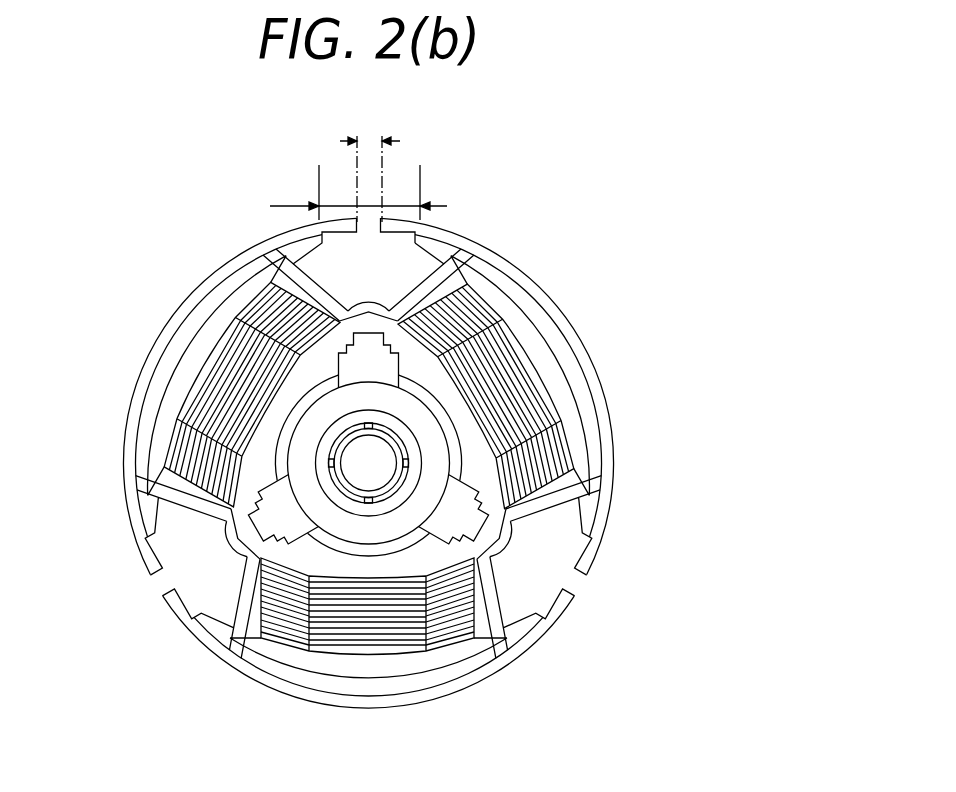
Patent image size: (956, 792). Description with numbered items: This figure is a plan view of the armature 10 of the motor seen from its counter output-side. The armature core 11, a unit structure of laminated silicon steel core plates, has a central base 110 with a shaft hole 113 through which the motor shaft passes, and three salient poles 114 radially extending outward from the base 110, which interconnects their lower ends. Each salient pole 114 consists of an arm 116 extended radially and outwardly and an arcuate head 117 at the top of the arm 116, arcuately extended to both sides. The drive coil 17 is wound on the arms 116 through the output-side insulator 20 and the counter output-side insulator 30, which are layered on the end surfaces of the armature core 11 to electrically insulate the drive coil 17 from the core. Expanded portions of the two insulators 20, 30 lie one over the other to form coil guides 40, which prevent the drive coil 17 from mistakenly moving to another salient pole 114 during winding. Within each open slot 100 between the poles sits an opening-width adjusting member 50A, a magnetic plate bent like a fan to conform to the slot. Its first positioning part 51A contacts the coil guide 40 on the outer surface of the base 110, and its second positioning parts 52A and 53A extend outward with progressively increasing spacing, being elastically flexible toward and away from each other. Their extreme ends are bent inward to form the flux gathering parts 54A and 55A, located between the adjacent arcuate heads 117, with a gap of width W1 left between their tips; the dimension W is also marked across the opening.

The armature 10 is at (630, 200).
The armature core 11 is at (597, 366).
The salient pole 114 is at (666, 240).
The arm 116 is at (503, 357).
The arcuate head 117 is at (582, 328).
The shaft hole 113 is at (380, 457).
The base 110 is at (316, 430).
The open slot 100 is at (297, 297).
The coil guide 40 is at (367, 325).
The counter output-side insulator 30 is at (250, 498).
The output-side insulator 20 is at (273, 518).
The drive coil 17 is at (528, 484).
The opening-width adjusting member 50A is at (459, 251).
The first positioning part 51A is at (432, 240).
The second positioning part 52A is at (293, 262).
The second positioning part 53A is at (447, 241).
The flux gathering part 54A is at (344, 216).
The flux gathering part 55A is at (396, 222).
The pole tip width W is at (358, 192).
The width of gap W1 is at (370, 165).